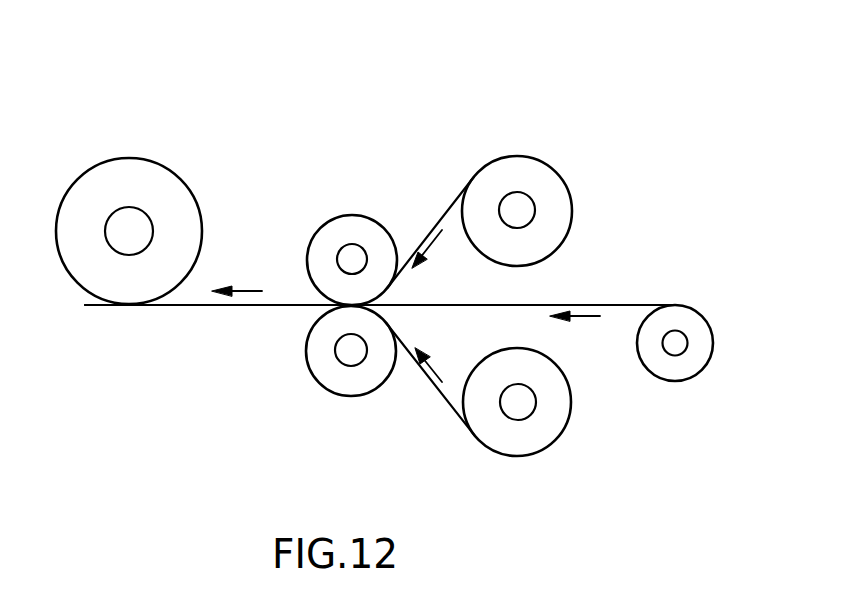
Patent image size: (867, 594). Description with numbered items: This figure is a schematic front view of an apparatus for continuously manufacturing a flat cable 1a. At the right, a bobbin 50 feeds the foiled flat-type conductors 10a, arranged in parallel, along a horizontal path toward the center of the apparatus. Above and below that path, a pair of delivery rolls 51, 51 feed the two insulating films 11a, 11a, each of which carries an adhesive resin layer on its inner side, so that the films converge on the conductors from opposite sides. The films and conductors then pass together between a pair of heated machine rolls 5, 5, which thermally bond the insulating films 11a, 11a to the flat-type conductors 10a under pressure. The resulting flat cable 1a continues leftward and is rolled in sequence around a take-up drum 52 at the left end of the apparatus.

The flat cable 1a is at (227, 306).
The heated machine roll 5 is at (335, 232).
The flat-type conductor 10a is at (598, 306).
The insulating film 11a is at (435, 226).
The bobbin 50 is at (692, 323).
The delivery roll 51 is at (536, 167).
The take-up drum 52 is at (150, 182).